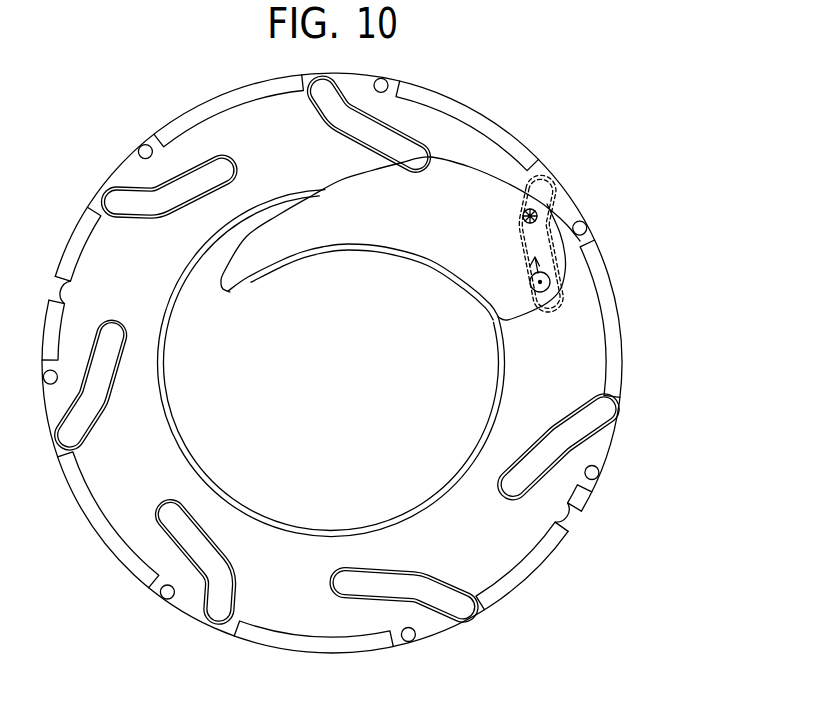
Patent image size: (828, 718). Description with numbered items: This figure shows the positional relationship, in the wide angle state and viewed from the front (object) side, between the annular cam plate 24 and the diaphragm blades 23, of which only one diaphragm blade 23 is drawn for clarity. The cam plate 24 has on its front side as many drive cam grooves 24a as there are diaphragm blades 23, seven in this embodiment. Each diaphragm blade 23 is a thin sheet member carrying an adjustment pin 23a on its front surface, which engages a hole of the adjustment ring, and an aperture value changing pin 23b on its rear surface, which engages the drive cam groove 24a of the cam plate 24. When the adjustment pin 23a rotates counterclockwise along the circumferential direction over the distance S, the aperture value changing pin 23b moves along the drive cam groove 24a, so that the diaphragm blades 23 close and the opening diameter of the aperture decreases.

The diaphragm blade 23 is at (483, 187).
The adjustment pin 23a is at (544, 287).
The aperture value changing pin 23b is at (531, 212).
The cam plate 24 is at (500, 547).
The drive cam groove 24a is at (575, 405).
The distance S is at (540, 273).